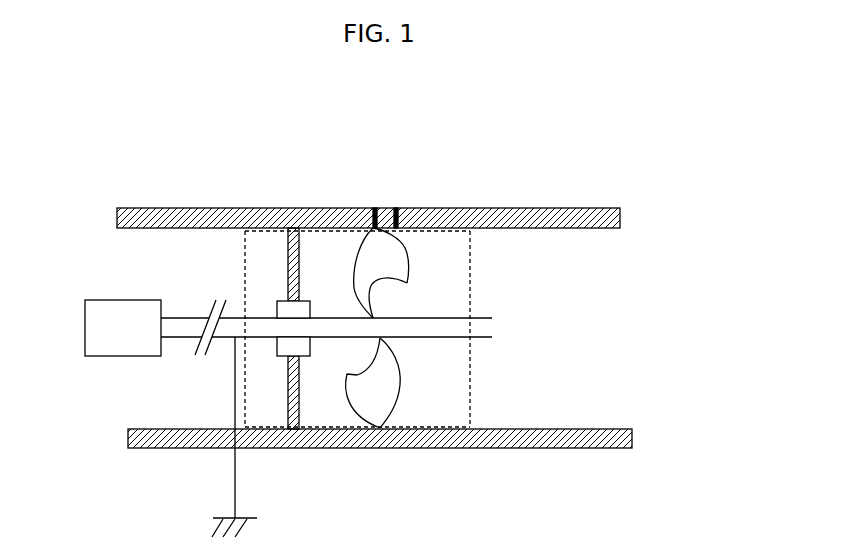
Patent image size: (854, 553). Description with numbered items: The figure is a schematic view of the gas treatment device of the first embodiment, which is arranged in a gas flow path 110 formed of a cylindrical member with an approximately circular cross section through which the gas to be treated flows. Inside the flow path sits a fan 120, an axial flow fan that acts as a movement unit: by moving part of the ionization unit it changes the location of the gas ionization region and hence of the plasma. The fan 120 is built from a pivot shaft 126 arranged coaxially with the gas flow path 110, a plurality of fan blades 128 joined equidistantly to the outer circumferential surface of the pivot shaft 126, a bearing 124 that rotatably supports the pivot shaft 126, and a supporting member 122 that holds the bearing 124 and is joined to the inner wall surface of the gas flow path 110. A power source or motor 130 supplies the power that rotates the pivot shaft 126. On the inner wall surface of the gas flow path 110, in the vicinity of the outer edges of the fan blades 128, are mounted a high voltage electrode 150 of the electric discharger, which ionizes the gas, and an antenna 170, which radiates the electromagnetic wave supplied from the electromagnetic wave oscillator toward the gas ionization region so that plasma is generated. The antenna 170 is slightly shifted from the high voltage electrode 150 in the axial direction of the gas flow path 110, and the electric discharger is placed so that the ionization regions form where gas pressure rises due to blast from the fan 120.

The gas flow path 110 is at (170, 253).
The fan 120 is at (472, 392).
The supporting member 122 is at (300, 404).
The bearing 124 is at (298, 300).
The pivot shaft 126 is at (478, 317).
The fan blades 128 is at (408, 265).
The power source (motor) 130 is at (95, 356).
The high voltage electrode 150 is at (375, 208).
The antenna 170 is at (396, 208).